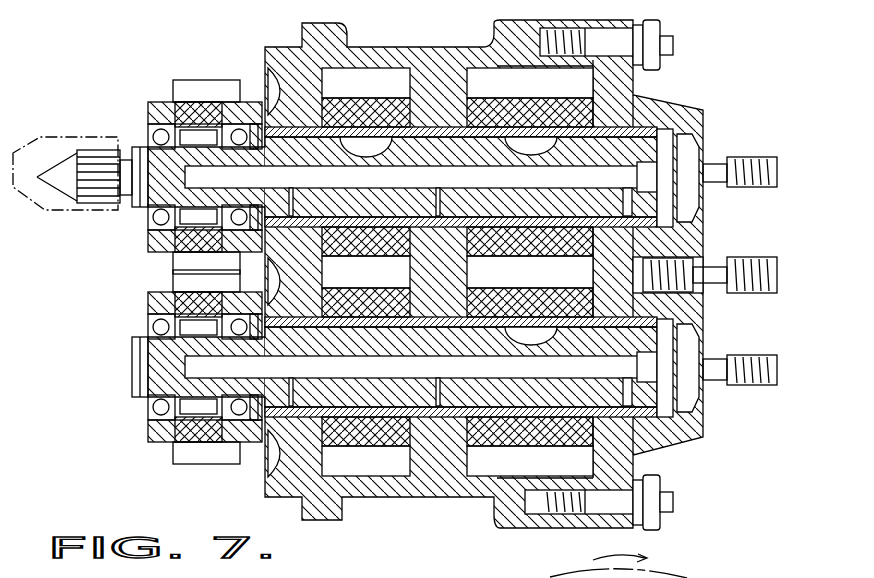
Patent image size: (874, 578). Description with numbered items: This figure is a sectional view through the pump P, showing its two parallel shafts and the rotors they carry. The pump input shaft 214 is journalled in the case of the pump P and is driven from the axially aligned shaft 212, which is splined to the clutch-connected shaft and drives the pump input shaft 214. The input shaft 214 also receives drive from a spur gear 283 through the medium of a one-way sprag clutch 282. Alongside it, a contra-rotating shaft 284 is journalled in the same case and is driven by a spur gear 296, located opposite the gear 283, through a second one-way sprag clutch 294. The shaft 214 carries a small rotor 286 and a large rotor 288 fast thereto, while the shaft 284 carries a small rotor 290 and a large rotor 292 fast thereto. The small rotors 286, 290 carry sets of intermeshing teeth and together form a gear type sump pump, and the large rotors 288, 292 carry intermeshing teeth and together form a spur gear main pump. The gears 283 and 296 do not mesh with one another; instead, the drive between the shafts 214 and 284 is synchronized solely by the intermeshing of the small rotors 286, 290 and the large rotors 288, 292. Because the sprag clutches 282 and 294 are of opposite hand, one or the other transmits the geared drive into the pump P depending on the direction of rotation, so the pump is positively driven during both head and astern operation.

The axially aligned shaft 212 is at (43, 124).
The spur gear 283 is at (180, 90).
The one-way sprag clutch 282 is at (197, 128).
The pump input shaft 214 is at (263, 133).
The small rotor 286 is at (372, 80).
The pump P is at (450, 50).
The large rotor 288 is at (484, 84).
The contra-rotating shaft 284 is at (145, 380).
The one-way sprag clutch 294 is at (196, 405).
The spur gear 296 is at (223, 450).
The small rotor 290 is at (393, 466).
The large rotor 292 is at (507, 467).